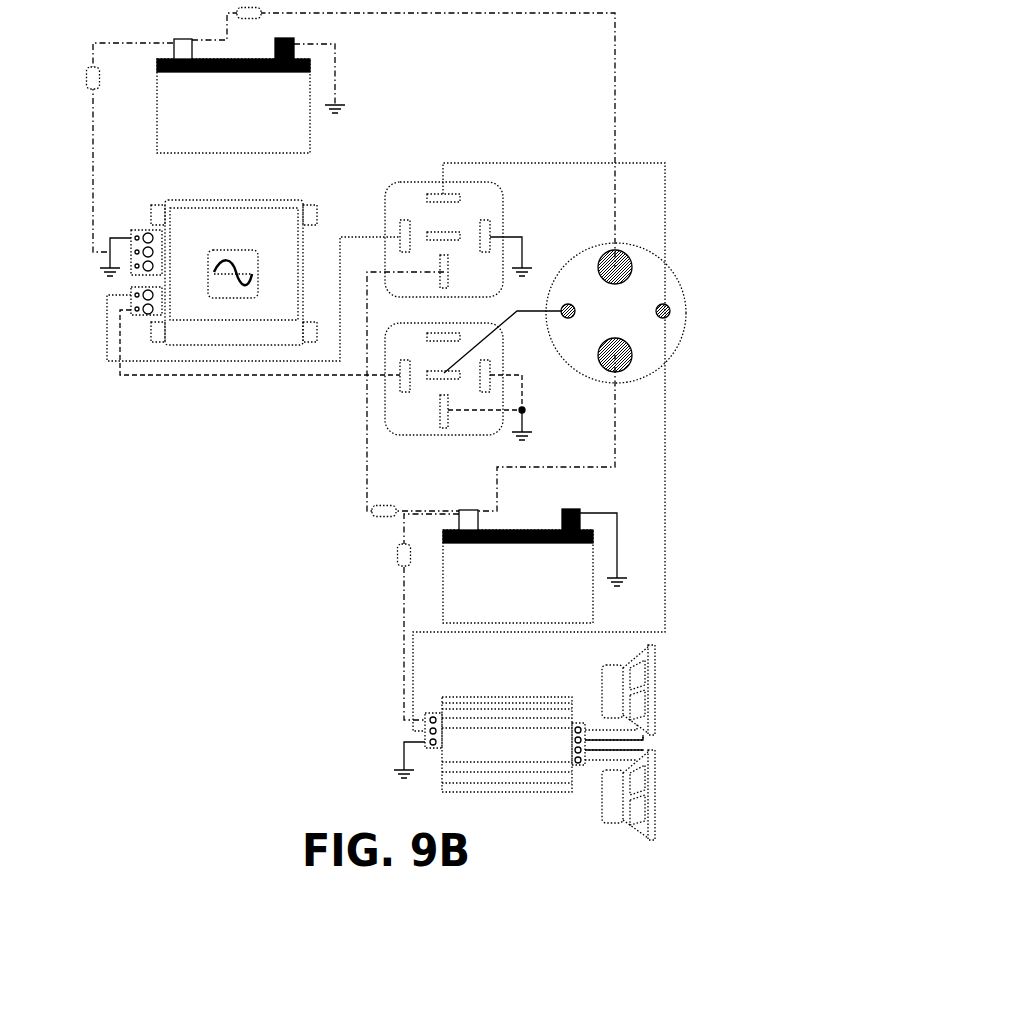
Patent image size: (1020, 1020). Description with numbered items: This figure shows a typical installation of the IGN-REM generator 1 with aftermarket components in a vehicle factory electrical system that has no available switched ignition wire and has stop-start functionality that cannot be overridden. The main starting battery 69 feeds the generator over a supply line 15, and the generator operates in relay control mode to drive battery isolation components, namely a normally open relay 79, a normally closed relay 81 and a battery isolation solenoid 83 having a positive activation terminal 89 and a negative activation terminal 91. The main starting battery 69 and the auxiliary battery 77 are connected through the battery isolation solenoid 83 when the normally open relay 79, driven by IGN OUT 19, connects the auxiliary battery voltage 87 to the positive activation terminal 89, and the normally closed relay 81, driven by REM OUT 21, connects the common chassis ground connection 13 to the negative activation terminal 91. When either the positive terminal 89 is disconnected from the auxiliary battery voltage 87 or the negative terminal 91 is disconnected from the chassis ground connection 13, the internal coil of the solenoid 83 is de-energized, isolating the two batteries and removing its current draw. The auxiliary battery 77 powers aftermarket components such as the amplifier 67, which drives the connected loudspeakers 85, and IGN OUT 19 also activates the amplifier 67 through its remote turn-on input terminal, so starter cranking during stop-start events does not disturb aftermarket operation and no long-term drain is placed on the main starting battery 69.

The IGN-REM generator 1 is at (163, 193).
The chassis ground connection 13 is at (530, 430).
The main battery power line 15 is at (92, 157).
The IGN OUT 19 is at (105, 332).
The REM OUT 21 is at (256, 381).
The amplifier 67 is at (508, 701).
The main starting battery 69 is at (231, 154).
The auxiliary battery 77 is at (512, 530).
The normally open relay 79 is at (403, 186).
The normally closed relay 81 is at (403, 433).
The battery isolation solenoid 83 is at (587, 258).
The loudspeakers 85 is at (652, 744).
The auxiliary battery voltage 87 is at (400, 608).
The positive activation terminal 89 is at (673, 311).
The negative activation terminal 91 is at (563, 322).